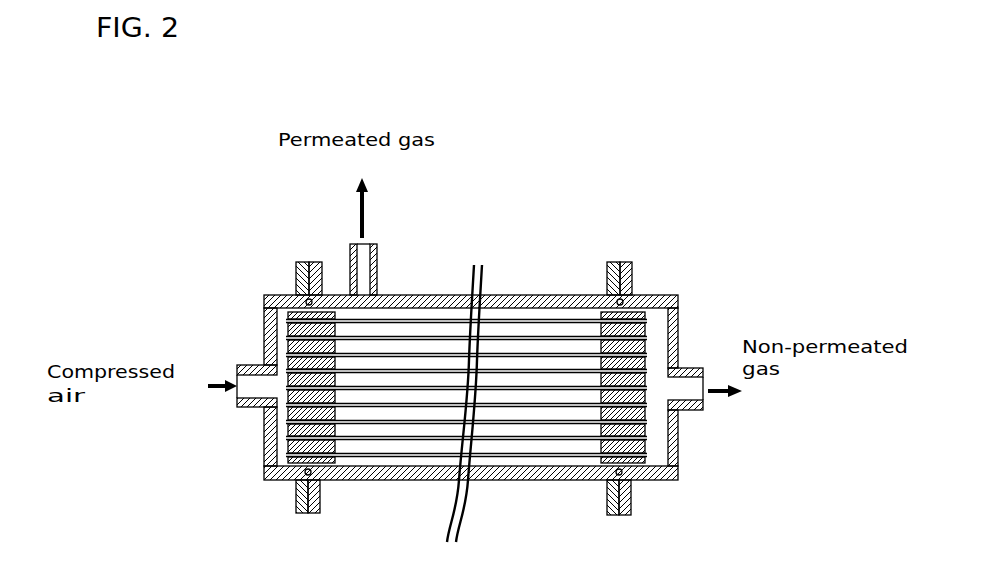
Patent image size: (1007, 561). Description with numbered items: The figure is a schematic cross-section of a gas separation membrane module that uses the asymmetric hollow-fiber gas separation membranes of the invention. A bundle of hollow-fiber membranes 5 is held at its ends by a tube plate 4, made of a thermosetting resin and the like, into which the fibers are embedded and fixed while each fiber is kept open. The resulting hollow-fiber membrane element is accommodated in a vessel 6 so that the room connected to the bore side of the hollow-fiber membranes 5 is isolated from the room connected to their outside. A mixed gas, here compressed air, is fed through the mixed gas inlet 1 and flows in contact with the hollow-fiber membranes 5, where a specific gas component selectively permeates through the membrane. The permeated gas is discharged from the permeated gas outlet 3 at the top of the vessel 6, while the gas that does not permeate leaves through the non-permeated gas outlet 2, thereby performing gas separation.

The mixed gas inlet 1 is at (253, 387).
The non-permeated gas outlet 2 is at (687, 392).
The permeated gas outlet 3 is at (375, 245).
The tube plate 4 is at (300, 362).
The hollow-fiber membrane 5 is at (385, 333).
The vessel 6 is at (510, 300).